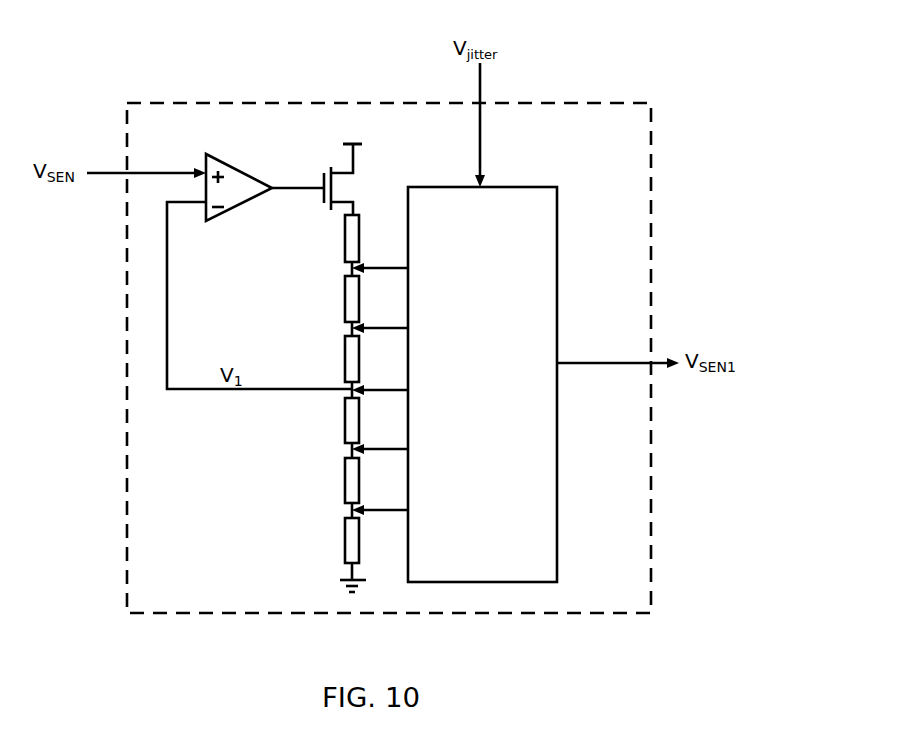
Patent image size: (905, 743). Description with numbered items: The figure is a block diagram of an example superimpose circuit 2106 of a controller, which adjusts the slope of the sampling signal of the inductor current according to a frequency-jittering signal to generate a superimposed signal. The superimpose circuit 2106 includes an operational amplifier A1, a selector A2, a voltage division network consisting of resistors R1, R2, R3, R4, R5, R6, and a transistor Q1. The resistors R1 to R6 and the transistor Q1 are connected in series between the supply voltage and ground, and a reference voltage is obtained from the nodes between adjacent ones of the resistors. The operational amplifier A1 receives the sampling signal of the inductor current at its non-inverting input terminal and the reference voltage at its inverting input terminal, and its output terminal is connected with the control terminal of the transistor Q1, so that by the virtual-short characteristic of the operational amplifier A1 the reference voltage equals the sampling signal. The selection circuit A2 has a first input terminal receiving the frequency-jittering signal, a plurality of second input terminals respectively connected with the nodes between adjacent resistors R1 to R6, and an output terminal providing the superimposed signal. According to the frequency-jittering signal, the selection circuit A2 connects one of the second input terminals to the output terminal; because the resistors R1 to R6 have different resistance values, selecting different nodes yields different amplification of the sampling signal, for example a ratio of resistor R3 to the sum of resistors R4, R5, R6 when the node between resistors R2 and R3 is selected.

The superimpose circuit 2106 is at (389, 358).
The operational amplifier A1 is at (243, 160).
The transistor Q1 is at (363, 185).
The selector A2 is at (537, 185).
The resistor R1 is at (327, 245).
The resistor R2 is at (327, 306).
The resistor R3 is at (327, 367).
The resistor R4 is at (327, 428).
The resistor R5 is at (327, 488).
The resistor R6 is at (327, 549).